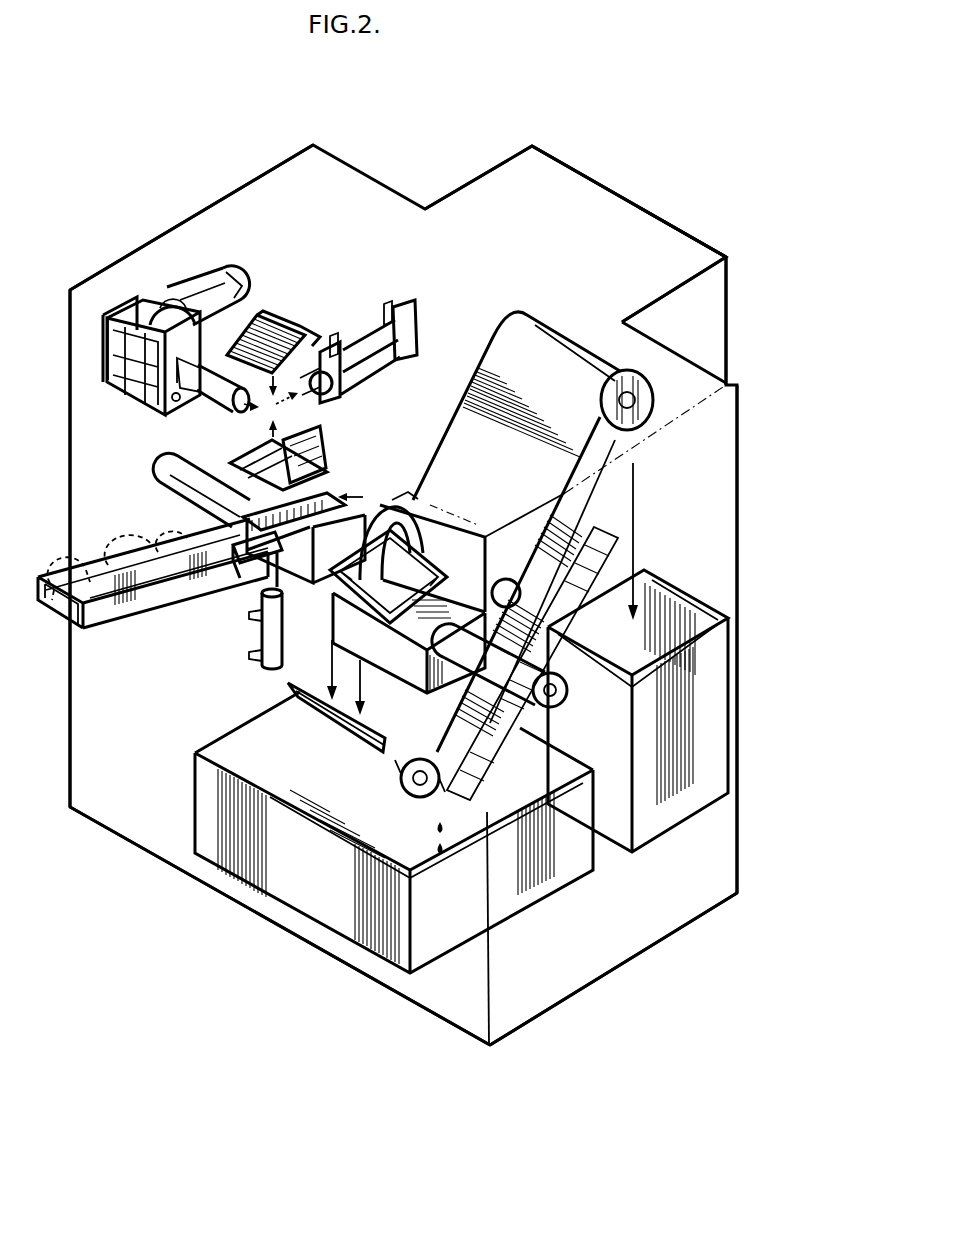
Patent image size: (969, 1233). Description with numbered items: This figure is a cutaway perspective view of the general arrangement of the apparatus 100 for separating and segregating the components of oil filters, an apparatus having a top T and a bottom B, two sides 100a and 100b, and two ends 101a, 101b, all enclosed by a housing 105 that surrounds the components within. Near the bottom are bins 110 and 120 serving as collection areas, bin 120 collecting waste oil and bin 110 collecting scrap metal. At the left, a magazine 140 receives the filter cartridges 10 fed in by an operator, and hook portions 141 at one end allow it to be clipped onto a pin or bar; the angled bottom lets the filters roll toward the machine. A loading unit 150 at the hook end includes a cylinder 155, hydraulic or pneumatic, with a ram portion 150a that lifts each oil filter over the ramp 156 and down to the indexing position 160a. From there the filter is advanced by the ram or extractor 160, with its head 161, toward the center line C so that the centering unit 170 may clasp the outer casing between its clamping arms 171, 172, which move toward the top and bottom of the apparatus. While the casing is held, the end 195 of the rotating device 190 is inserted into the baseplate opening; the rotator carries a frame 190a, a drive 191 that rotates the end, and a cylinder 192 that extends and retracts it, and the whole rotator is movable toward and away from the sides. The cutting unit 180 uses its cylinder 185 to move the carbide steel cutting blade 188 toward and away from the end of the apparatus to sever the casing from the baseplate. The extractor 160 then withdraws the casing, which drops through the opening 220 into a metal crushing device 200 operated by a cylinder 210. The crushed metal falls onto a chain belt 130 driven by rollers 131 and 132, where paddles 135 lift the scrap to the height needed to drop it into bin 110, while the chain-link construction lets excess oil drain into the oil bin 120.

The apparatus 100 is at (490, 140).
The side 100a is at (133, 293).
The side 100b is at (720, 500).
The end 101a is at (122, 828).
The end 101b is at (640, 206).
The housing 105 is at (703, 240).
The top T is at (560, 185).
The bottom B is at (655, 947).
The bin 110 is at (713, 697).
The bin 120 is at (350, 907).
The chain belt 130 is at (553, 340).
The roller 131 is at (647, 383).
The roller 132 is at (423, 800).
The paddles 135 is at (300, 727).
The magazine 140 is at (103, 620).
The hook portions 141 is at (282, 557).
The oil filter 10 is at (85, 577).
The loading unit 150 is at (255, 597).
The ram portion 150a is at (167, 473).
The cylinder 155 is at (248, 655).
The ramp 156 is at (323, 480).
The extractor 160 is at (454, 553).
The indexing position 160a is at (357, 490).
The head 161 is at (408, 496).
The centering unit 170 is at (247, 465).
The clamping element 171 is at (290, 453).
The clamping element 172 is at (310, 333).
The cutting unit 180 is at (400, 307).
The cylinder 185 is at (417, 313).
The cutting blade 188 is at (334, 334).
The rotating device 190 is at (140, 293).
The frame 190a is at (108, 383).
The drive 191 is at (240, 282).
The cylinder 192 is at (133, 302).
The end 195 is at (195, 410).
The metal crushing device 200 is at (397, 657).
The cylinder 210 is at (555, 700).
The opening 220 is at (388, 589).
The center line C is at (271, 406).